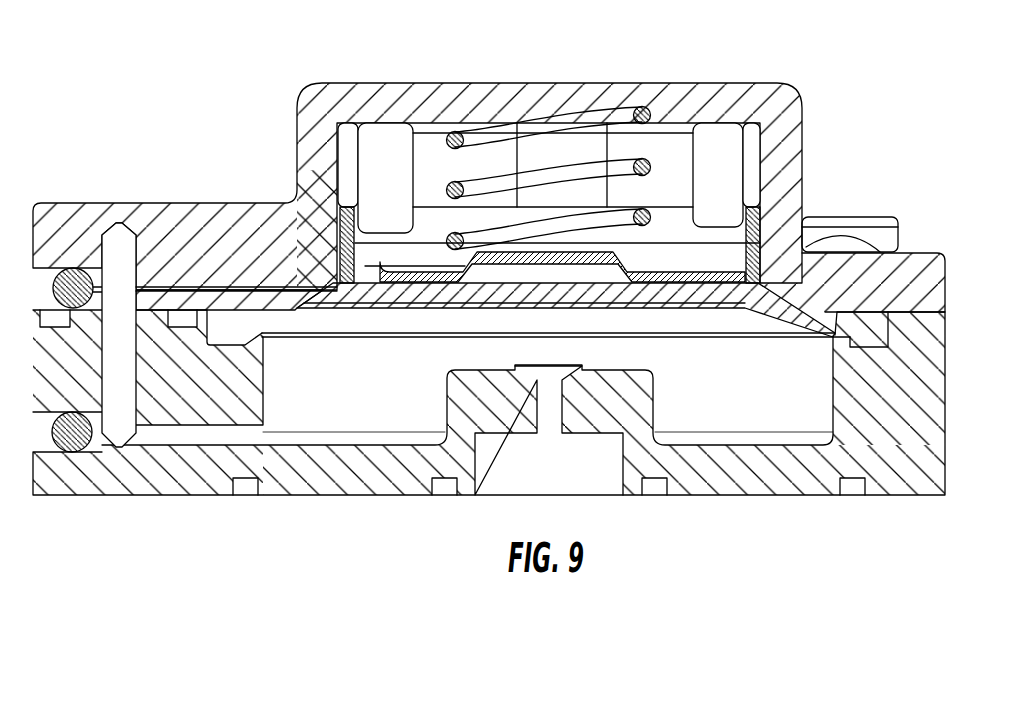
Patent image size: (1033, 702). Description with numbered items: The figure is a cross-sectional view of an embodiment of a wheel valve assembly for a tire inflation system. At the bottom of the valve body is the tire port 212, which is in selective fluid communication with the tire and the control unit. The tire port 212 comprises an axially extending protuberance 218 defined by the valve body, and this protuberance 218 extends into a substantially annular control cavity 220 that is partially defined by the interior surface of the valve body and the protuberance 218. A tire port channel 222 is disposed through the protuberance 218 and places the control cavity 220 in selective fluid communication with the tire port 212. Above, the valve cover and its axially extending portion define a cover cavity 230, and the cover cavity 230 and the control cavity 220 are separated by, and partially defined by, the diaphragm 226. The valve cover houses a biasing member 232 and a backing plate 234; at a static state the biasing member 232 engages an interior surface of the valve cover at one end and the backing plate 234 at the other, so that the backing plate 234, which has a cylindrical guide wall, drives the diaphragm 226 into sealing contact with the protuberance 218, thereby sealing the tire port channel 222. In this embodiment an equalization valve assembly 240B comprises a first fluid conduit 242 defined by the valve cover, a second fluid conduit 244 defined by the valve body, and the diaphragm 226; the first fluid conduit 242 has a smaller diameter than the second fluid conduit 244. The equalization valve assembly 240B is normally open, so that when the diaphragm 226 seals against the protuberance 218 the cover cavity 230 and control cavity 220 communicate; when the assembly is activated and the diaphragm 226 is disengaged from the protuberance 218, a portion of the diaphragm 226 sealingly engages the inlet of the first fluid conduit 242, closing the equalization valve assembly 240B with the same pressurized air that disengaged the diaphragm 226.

The tire port 212 is at (492, 485).
The protuberance 218 is at (467, 381).
The control cavity 220 is at (317, 437).
The tire port channel 222 is at (550, 415).
The diaphragm 226 is at (803, 312).
The cover cavity 230 is at (727, 167).
The biasing member 232 is at (473, 133).
The backing plate 234 is at (333, 283).
The equalization valve assembly 240B is at (328, 278).
The first fluid conduit 242 is at (200, 285).
The second fluid conduit 244 is at (177, 437).